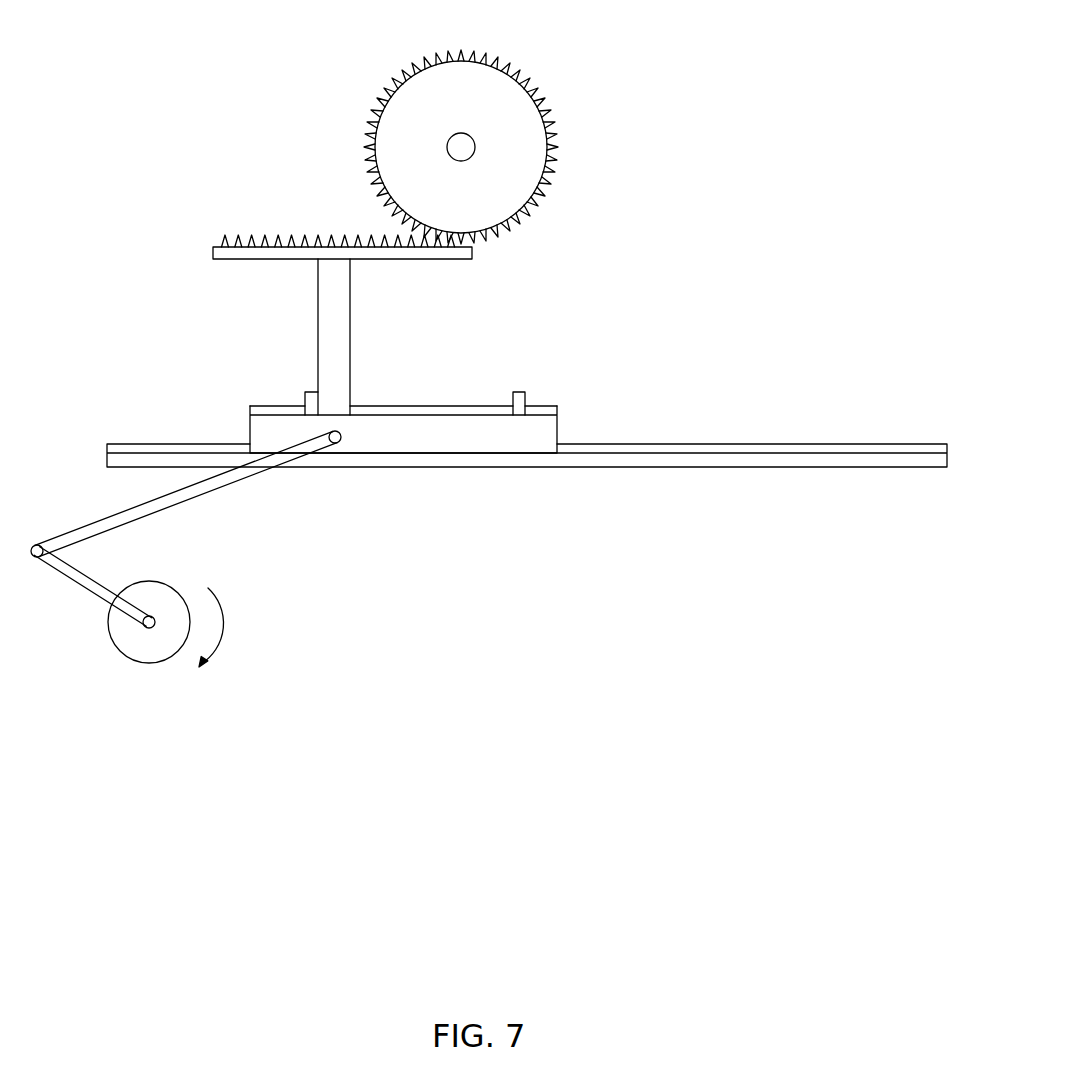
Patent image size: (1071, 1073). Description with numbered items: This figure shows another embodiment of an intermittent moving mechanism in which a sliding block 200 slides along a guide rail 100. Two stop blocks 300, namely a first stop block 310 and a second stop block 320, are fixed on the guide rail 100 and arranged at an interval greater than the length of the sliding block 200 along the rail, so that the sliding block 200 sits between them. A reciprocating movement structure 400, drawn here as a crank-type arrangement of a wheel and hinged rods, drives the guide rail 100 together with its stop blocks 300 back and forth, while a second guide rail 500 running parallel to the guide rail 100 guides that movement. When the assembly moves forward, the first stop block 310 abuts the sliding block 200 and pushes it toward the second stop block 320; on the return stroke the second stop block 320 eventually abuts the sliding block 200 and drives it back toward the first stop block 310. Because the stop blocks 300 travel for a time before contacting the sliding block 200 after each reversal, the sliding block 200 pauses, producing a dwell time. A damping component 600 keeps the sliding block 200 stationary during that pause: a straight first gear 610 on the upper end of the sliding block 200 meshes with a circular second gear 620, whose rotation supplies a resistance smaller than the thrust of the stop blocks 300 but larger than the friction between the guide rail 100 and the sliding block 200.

The guide rail 100 is at (446, 426).
The sliding block 200 is at (333, 328).
The stop blocks 300 is at (407, 364).
The first stop block 310 is at (313, 405).
The second stop block 320 is at (517, 400).
The reciprocating movement structure 400 is at (182, 563).
The second guide rail 500 is at (685, 454).
The damping component 600 is at (369, 150).
The first gear 610 is at (376, 250).
The second gear 620 is at (468, 113).